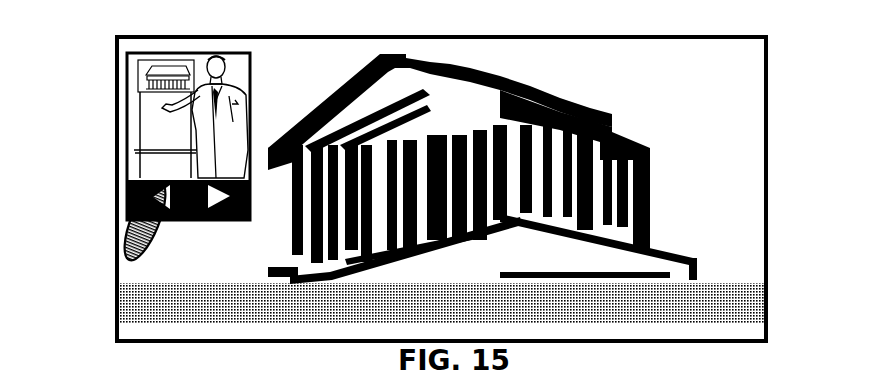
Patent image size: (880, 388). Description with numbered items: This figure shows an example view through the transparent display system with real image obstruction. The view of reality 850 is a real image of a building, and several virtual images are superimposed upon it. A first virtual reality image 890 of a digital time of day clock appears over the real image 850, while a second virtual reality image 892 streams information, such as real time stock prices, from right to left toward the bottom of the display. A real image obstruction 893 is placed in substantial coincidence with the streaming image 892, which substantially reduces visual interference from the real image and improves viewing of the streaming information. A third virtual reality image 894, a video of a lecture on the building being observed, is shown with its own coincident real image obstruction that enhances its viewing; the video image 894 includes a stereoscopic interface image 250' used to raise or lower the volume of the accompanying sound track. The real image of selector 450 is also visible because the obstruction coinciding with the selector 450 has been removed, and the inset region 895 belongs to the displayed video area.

The third superimposed virtual reality image 894 is at (205, 53).
The picture-in-picture inset video 895 is at (190, 178).
The stereoscopic interface image 250' is at (142, 190).
The selector 450 is at (122, 232).
The view of reality 850 is at (528, 80).
The first virtual reality image 890 is at (655, 140).
The second virtual reality image 892 is at (148, 283).
The real image obstruction 893 is at (745, 283).